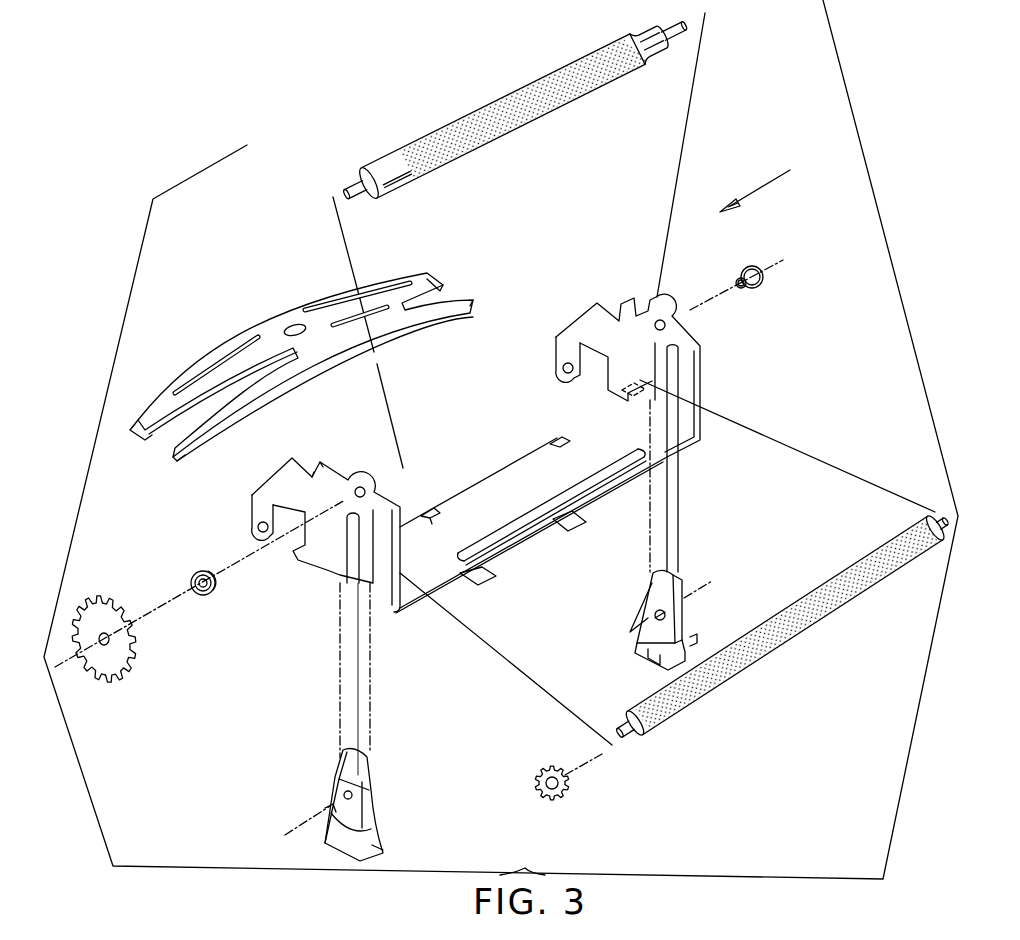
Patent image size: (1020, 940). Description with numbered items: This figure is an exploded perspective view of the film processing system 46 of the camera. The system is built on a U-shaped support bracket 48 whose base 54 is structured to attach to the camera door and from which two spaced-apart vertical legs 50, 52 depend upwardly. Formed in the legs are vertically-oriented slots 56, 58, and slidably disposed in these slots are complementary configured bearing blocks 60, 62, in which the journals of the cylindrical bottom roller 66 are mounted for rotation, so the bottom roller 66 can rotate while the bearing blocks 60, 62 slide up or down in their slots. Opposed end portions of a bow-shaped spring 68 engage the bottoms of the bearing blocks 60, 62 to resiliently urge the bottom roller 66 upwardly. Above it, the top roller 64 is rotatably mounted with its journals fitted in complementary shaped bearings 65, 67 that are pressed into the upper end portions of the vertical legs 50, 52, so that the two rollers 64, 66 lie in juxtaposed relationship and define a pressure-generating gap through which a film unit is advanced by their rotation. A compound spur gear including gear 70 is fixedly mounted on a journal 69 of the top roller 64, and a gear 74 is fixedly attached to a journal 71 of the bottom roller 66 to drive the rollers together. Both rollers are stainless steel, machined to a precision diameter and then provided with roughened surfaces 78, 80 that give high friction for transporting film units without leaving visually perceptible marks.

The processing system 46 is at (769, 182).
The support bracket 48 is at (464, 589).
The vertical leg 50 is at (338, 616).
The vertical leg 52 is at (643, 433).
The base 54 is at (532, 533).
The vertical slot 56 is at (351, 540).
The vertical slot 58 is at (656, 365).
The bearing block 60 is at (375, 807).
The bearing block 62 is at (685, 613).
The top roller 64 is at (505, 105).
The bearing 65 is at (212, 592).
The bottom roller 66 is at (785, 639).
The bearing 67 is at (752, 266).
The bow-shaped spring 68 is at (326, 354).
The journal 69 is at (347, 182).
The gear 70 is at (96, 599).
The journal 71 is at (637, 731).
The gear 74 is at (566, 793).
The roughened surface 78 is at (548, 111).
The roughened surface 80 is at (826, 606).